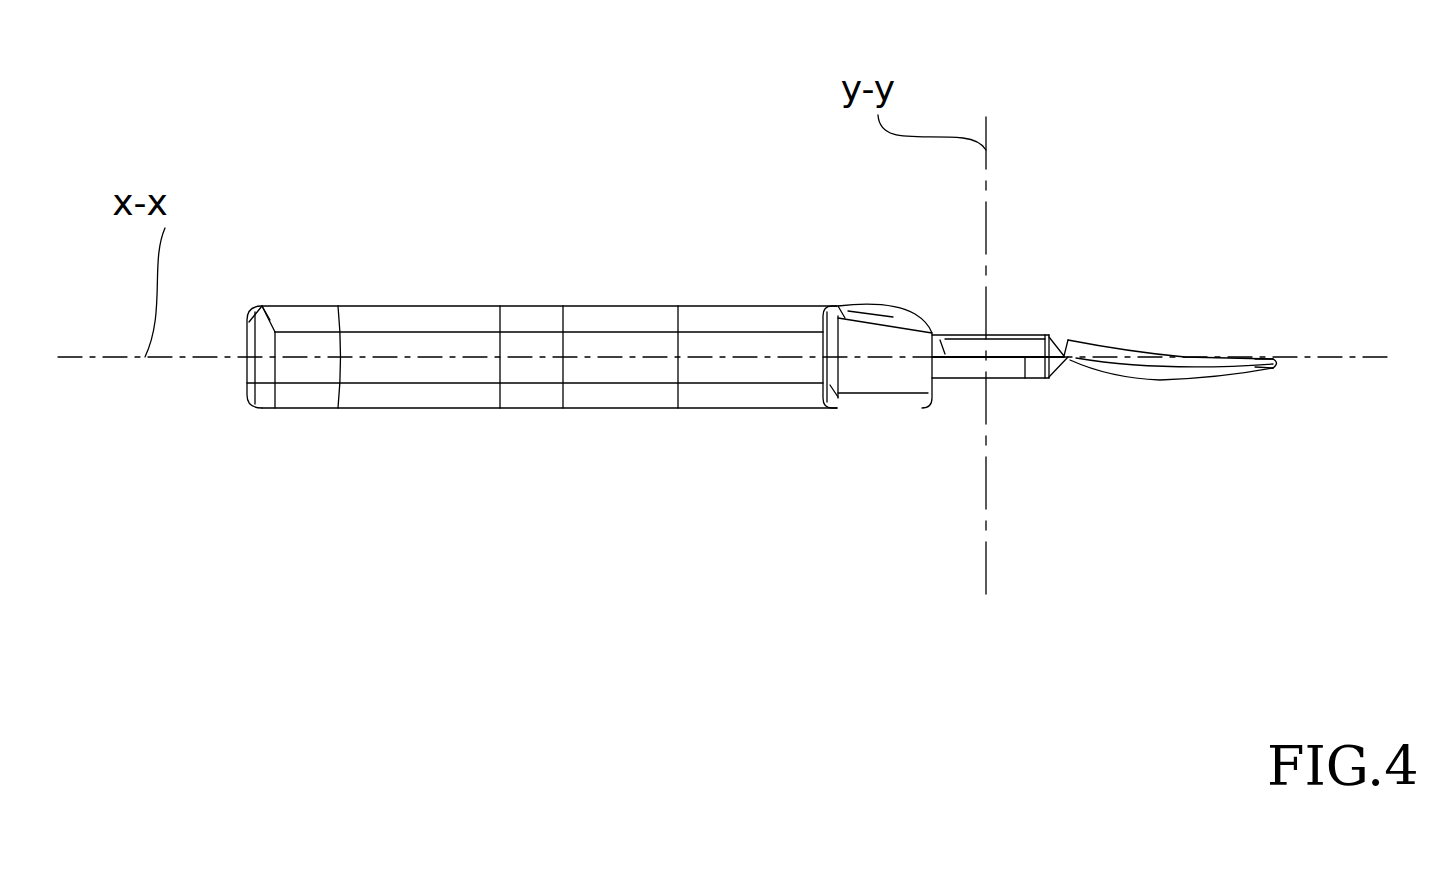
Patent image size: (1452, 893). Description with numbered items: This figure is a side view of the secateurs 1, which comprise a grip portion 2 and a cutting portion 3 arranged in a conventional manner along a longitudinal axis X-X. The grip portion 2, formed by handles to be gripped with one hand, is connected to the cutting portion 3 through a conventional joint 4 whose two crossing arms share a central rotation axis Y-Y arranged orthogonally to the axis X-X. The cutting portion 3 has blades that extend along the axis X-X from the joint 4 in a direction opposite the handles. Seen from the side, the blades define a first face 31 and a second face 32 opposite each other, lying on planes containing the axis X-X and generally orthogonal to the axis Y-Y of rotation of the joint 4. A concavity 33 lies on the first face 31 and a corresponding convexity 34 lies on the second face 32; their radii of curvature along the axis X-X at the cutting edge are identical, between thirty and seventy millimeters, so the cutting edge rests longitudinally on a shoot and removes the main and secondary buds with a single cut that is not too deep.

The secateurs 1 is at (1112, 162).
The grip portion 2 is at (525, 272).
The cutting portion 3 is at (1160, 297).
The joint 4 is at (1019, 412).
The first face 31 is at (1213, 347).
The second face 32 is at (1173, 393).
The concavity 33 is at (1128, 352).
The convexity 34 is at (1125, 379).